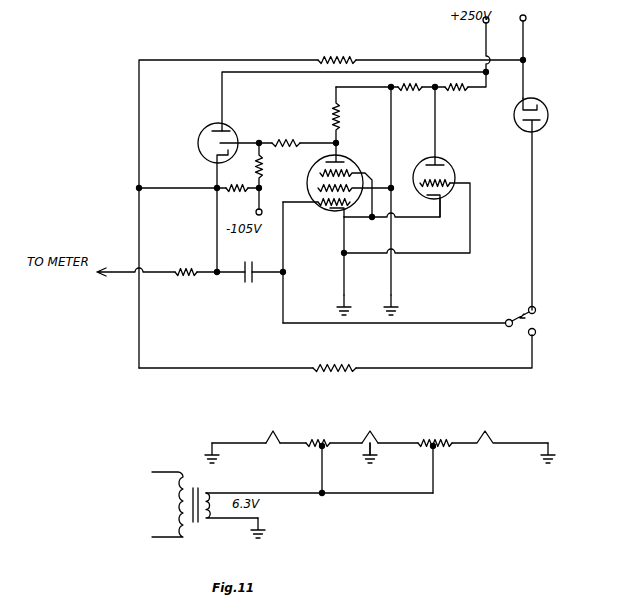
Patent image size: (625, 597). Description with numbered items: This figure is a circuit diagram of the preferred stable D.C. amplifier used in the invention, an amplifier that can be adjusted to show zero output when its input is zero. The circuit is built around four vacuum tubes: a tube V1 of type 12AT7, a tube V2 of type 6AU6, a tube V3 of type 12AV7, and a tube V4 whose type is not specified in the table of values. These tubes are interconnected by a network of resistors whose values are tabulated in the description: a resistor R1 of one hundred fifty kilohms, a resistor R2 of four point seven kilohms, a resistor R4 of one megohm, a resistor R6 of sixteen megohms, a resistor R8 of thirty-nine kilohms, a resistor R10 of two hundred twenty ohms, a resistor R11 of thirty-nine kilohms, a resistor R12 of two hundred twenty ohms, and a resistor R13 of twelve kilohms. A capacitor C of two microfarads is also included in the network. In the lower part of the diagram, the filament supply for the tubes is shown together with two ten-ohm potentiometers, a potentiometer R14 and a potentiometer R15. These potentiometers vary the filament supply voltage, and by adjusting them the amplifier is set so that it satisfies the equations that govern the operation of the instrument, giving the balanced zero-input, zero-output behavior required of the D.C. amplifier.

The tube V1 is at (235, 149).
The tube V2 is at (326, 292).
The tube V3 is at (411, 275).
The tube V4 is at (540, 204).
The resistor R1 is at (337, 50).
The resistor R2 is at (410, 98).
The resistor R4 is at (347, 115).
The resistor R6 is at (270, 165).
The resistor R8 is at (183, 263).
The resistor R10 is at (354, 266).
The resistor R11 is at (403, 201).
The resistor R12 is at (334, 379).
The resistor R13 is at (459, 96).
The potentiometer R14 is at (318, 453).
The potentiometer R15 is at (435, 453).
The capacitor C is at (248, 281).